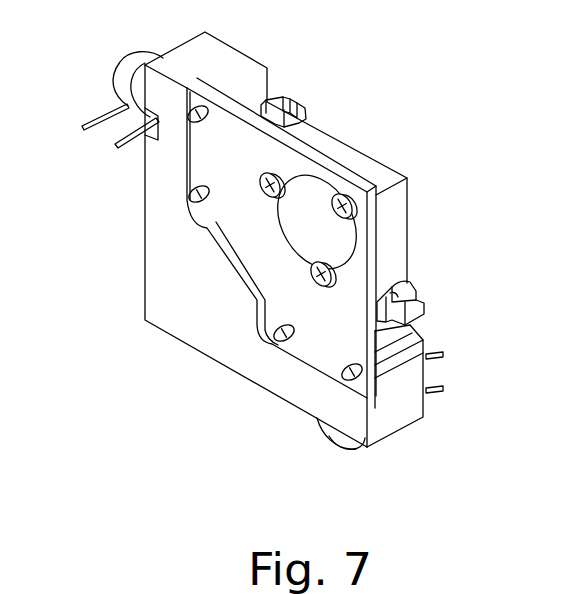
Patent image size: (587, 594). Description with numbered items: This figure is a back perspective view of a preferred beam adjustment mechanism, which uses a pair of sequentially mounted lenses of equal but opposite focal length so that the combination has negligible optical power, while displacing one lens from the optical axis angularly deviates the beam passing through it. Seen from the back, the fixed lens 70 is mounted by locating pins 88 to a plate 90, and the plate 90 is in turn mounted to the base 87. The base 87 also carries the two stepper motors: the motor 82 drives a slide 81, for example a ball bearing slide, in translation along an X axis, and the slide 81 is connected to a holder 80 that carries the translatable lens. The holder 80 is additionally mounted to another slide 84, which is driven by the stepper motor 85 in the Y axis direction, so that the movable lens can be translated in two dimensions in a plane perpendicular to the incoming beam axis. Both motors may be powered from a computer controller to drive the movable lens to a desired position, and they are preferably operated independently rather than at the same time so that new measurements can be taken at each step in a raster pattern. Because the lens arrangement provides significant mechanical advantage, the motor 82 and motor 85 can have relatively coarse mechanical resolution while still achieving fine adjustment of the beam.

The lens 70 is at (305, 197).
The holder 80 is at (392, 250).
The slide 81 is at (273, 108).
The motor 82 is at (132, 89).
The slide 84 is at (421, 300).
The stepper motor 85 is at (328, 438).
The base 87 is at (160, 287).
The locating pins 88 is at (280, 173).
The plate 90 is at (333, 333).